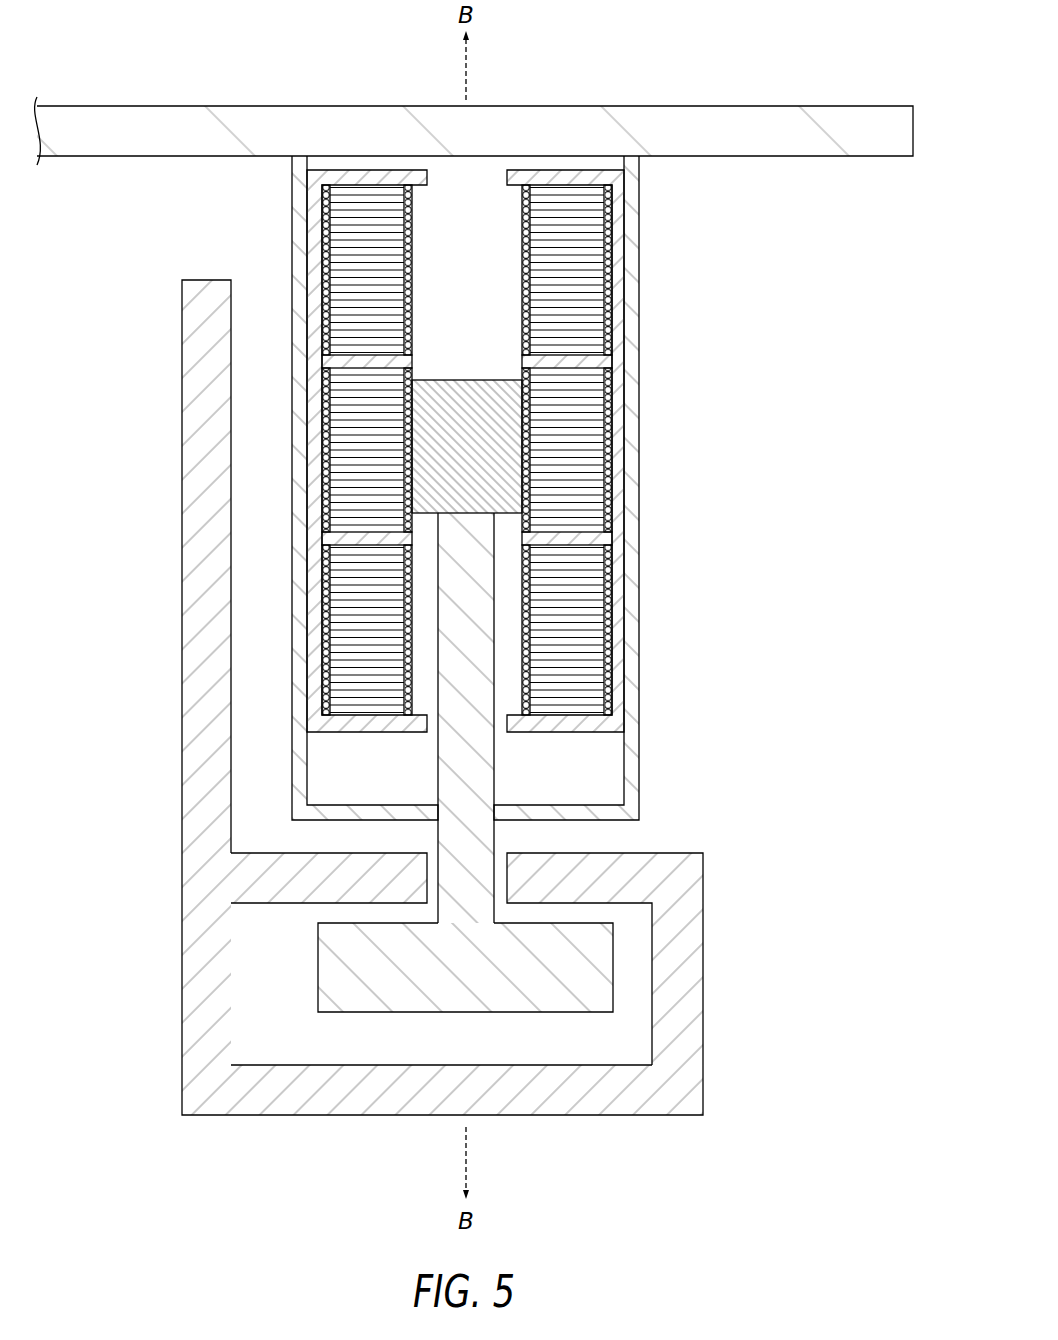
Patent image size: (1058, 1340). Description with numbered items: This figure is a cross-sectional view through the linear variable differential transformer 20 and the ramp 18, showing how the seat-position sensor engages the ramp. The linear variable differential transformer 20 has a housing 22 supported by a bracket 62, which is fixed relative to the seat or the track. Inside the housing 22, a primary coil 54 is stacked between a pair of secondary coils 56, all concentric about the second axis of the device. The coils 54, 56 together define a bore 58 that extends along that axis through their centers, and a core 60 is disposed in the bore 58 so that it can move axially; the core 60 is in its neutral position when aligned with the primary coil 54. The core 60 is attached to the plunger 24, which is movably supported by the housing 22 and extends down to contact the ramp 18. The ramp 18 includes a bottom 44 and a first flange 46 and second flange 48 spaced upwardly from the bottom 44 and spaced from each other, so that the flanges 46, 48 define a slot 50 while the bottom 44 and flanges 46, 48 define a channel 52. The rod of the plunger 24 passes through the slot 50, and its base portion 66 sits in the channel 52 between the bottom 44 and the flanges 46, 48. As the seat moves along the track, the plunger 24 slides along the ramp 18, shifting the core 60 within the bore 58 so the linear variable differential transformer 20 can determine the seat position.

The ramp 18 is at (181, 380).
The linear variable differential transformer 20 is at (646, 224).
The housing 22 is at (632, 522).
The plunger 24 is at (616, 948).
The bottom 44 is at (632, 1097).
The first flange 46 is at (658, 873).
The second flange 48 is at (280, 882).
The slot 50 is at (499, 868).
The channel 52 is at (271, 979).
The primary coil 54 is at (355, 437).
The secondary coils 56 is at (355, 252).
The bore 58 is at (480, 218).
The core 60 is at (497, 425).
The bracket 62 is at (776, 106).
The base portion 66 is at (590, 993).